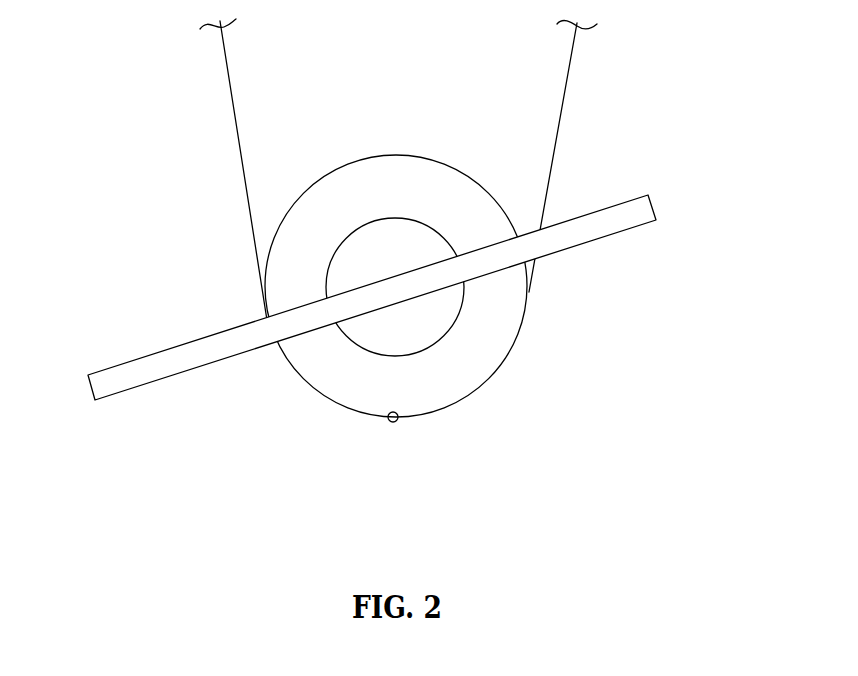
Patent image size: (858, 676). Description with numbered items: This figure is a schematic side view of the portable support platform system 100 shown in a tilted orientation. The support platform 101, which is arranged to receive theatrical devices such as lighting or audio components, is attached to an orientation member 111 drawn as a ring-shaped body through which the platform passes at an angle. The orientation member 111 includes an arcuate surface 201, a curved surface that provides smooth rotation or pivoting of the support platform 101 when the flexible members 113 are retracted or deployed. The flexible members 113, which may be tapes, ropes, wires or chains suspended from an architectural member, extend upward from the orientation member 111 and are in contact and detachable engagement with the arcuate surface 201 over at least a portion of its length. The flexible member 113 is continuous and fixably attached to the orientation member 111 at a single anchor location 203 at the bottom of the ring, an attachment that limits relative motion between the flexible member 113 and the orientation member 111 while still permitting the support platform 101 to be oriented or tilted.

The portable support platform system 100 is at (461, 267).
The support platform 101 is at (652, 205).
The orientation member 111 is at (429, 160).
The flexible members 113 is at (229, 84).
The arcuate surface 201 is at (358, 297).
The anchor location 203 is at (397, 423).